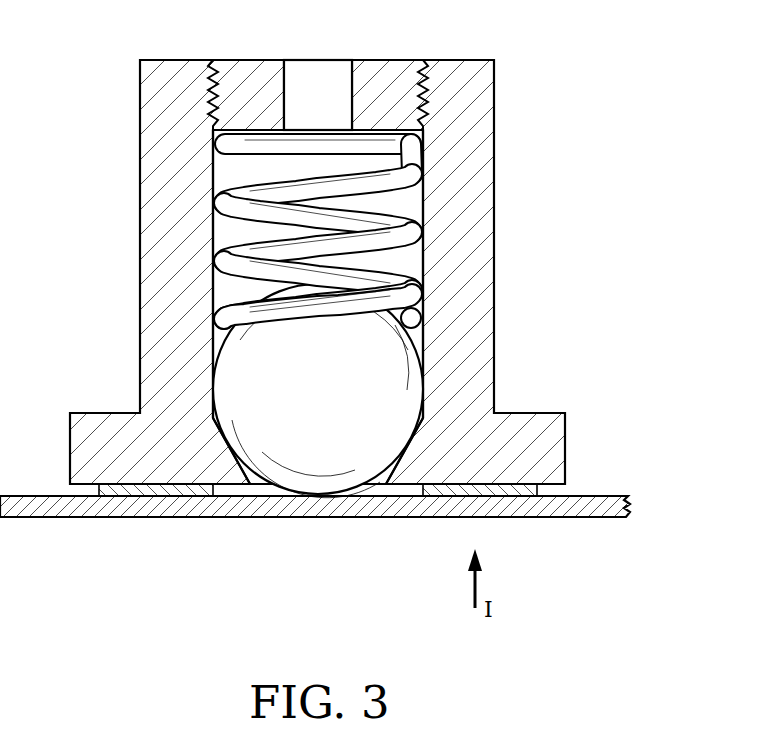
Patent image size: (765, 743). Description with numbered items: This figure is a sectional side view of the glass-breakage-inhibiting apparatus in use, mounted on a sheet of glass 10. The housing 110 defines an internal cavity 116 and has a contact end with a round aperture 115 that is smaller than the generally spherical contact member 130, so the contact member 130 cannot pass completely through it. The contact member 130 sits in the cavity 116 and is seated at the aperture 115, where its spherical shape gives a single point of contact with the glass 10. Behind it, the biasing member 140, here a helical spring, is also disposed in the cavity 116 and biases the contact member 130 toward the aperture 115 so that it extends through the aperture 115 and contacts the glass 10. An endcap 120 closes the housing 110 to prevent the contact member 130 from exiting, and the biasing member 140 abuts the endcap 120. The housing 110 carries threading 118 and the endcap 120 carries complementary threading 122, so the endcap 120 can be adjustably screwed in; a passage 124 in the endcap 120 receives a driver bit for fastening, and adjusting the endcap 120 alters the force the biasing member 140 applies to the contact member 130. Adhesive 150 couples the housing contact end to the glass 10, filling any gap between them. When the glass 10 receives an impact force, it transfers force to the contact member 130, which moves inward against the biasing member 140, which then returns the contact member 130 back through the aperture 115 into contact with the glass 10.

The sheet of glass 10 is at (586, 522).
The housing 110 is at (530, 231).
The aperture 115 is at (262, 486).
The cavity 116 is at (405, 258).
The threading 118 is at (428, 113).
The endcap 120 is at (382, 67).
The complementary threading 122 is at (428, 97).
The passage for receiving a driver bit 124 is at (317, 80).
The contact member 130 is at (262, 390).
The biasing member 140 is at (232, 192).
The adhesive 150 is at (505, 490).